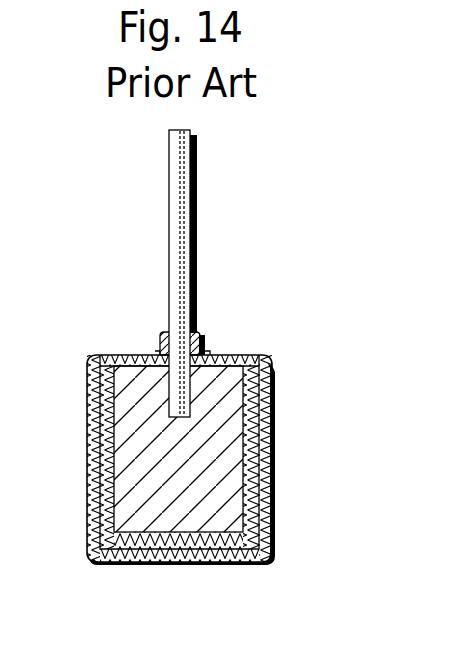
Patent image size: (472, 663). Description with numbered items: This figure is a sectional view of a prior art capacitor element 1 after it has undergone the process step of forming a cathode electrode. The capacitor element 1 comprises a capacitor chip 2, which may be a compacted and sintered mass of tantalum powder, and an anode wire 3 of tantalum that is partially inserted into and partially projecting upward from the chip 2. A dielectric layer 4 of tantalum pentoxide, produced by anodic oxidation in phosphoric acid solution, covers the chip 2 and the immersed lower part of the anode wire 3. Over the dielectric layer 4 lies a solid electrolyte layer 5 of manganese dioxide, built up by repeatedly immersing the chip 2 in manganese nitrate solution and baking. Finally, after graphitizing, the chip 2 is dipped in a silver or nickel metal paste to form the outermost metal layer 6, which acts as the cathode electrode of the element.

The capacitor element 1 is at (238, 321).
The capacitor chip 2 is at (225, 455).
The anode wire 3 is at (193, 178).
The dielectric layer 4 is at (243, 356).
The solid electrolyte layer 5 is at (276, 388).
The metal layer 6 is at (273, 505).